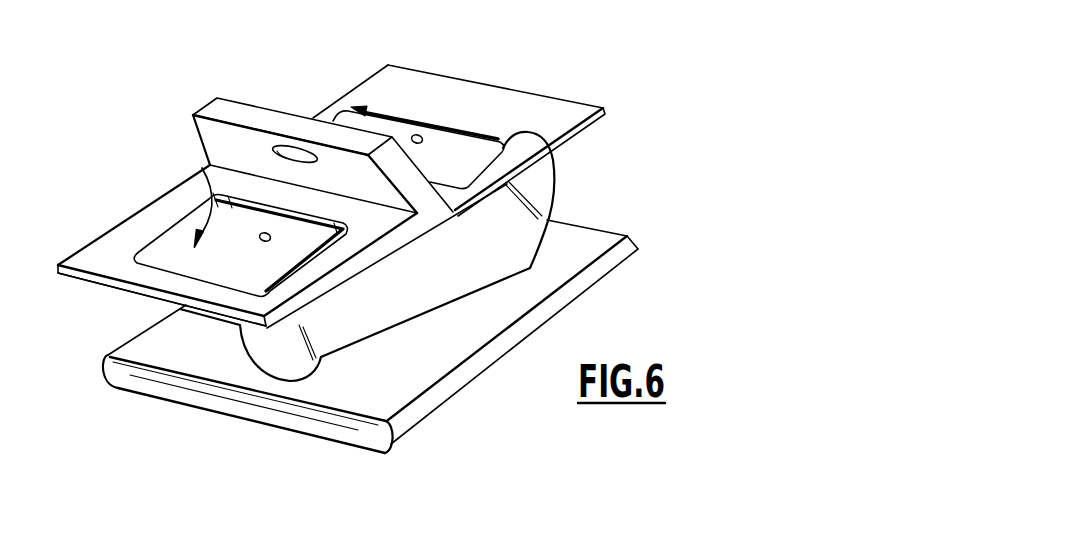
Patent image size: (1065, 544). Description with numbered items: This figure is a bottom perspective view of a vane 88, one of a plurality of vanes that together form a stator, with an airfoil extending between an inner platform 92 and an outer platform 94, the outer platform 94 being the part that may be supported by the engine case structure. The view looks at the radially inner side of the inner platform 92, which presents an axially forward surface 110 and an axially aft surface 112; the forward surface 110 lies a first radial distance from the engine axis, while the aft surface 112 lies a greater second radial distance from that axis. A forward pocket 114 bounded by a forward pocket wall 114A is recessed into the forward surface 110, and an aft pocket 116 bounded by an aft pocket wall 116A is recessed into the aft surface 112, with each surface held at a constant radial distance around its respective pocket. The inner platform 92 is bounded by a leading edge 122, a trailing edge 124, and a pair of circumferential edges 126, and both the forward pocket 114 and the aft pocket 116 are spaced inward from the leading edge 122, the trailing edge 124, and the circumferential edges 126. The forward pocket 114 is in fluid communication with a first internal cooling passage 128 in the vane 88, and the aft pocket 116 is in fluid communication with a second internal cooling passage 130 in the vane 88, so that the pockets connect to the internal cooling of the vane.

The vane 88 is at (672, 70).
The inner platform 92 is at (513, 98).
The outer platform 94 is at (416, 383).
The axially forward surface 110 is at (88, 258).
The axially aft surface 112 is at (572, 107).
The forward pocket 114 is at (182, 206).
The forward pocket wall 114A is at (202, 168).
The aft pocket 116 is at (362, 108).
The aft pocket wall 116A is at (553, 148).
The leading edge 122 is at (97, 287).
The trailing edge 124 is at (452, 80).
The circumferential edges 126 is at (315, 113).
The first internal cooling passage 128 is at (259, 240).
The second internal cooling passage 130 is at (424, 138).